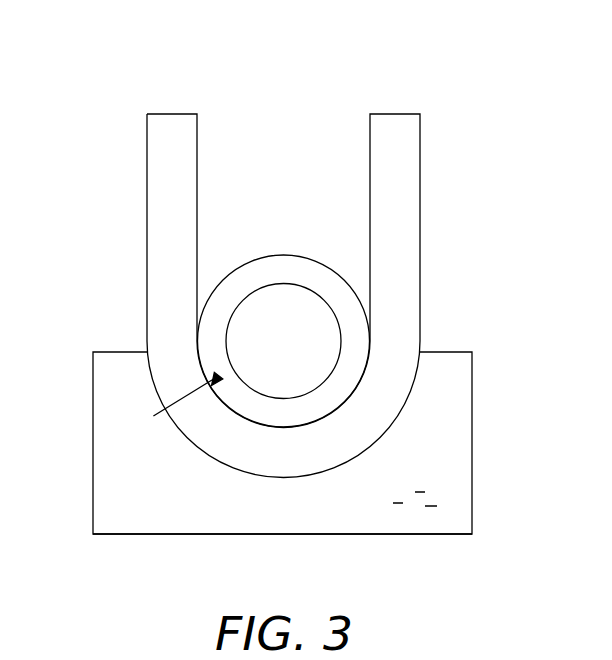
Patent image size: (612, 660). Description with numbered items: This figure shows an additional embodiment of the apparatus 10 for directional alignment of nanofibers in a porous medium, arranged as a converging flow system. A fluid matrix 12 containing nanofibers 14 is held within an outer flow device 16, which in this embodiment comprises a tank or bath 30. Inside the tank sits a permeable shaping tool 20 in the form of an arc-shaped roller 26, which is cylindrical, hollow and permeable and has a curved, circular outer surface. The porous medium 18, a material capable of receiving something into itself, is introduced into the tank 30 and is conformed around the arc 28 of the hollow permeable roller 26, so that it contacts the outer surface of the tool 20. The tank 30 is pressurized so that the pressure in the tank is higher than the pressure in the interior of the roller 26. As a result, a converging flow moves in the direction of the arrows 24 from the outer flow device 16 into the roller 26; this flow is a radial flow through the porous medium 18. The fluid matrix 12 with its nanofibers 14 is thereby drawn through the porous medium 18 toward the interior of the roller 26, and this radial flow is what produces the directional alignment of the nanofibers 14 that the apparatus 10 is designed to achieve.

The apparatus 10 is at (462, 60).
The fluid matrix 12 is at (332, 503).
The nanofibers 14 is at (208, 492).
The outer flow device 16 is at (400, 536).
The porous medium 18 is at (230, 298).
The permeable shaping tool 20 is at (228, 291).
The arrows 24 is at (217, 438).
The arc-shaped roller 26 is at (323, 268).
The arc 28 is at (217, 283).
The tank or bath 30 is at (473, 410).